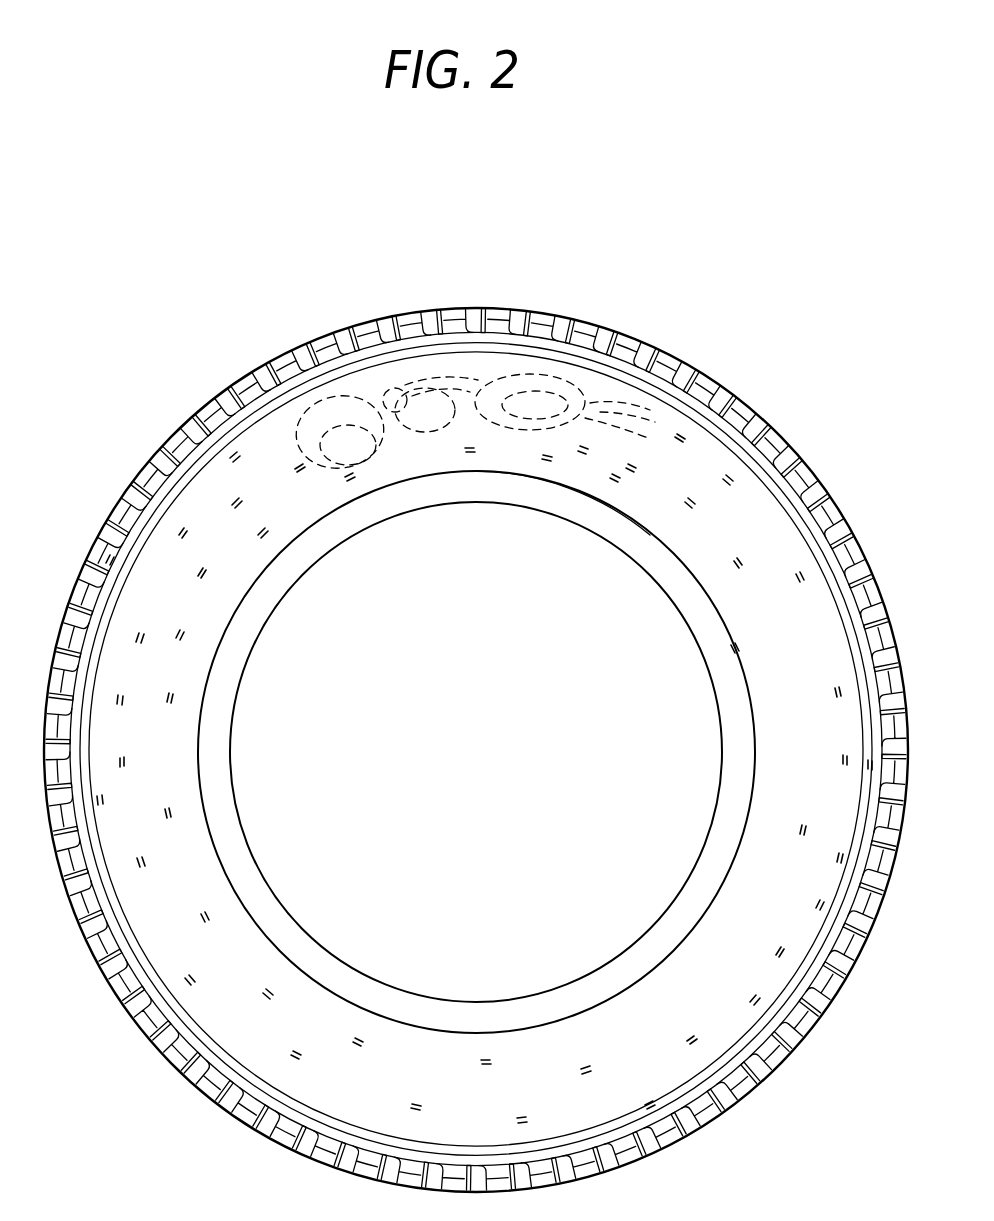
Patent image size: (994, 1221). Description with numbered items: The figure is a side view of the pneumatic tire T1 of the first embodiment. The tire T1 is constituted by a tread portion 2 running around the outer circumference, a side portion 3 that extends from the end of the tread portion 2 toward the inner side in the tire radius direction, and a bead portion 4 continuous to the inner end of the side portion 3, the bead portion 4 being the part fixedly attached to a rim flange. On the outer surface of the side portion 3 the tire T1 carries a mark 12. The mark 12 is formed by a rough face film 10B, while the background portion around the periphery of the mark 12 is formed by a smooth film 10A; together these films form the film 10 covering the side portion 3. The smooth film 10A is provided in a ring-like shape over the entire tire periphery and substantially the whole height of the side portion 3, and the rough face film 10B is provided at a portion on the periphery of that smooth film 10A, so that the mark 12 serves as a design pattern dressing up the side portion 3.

The pneumatic tire T1 is at (506, 213).
The tread portion 2 is at (525, 311).
The side portion 3 is at (750, 503).
The bead portion 4 is at (222, 727).
The inner liner / tire inner surface 10 is at (295, 535).
The smooth film 10A is at (582, 475).
The rough face film 10B is at (397, 390).
The mark 12 is at (497, 390).